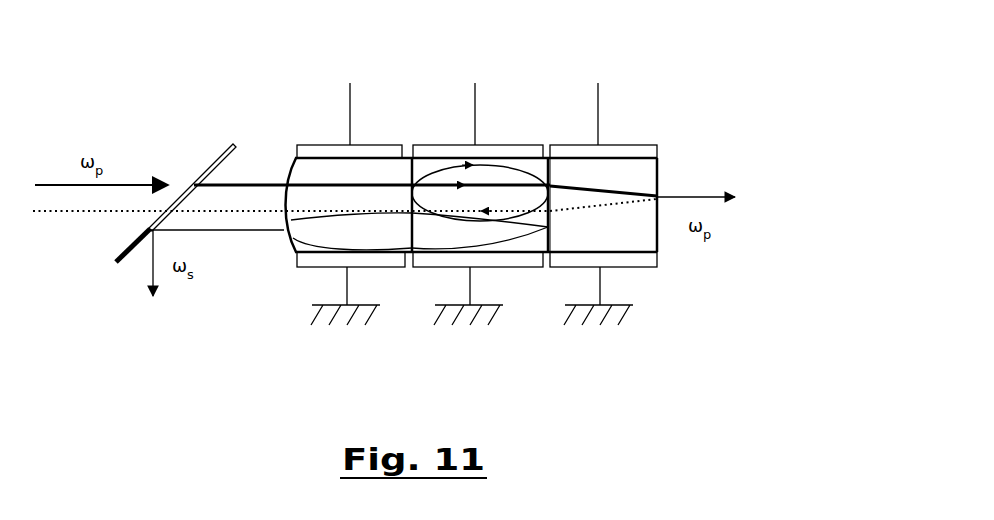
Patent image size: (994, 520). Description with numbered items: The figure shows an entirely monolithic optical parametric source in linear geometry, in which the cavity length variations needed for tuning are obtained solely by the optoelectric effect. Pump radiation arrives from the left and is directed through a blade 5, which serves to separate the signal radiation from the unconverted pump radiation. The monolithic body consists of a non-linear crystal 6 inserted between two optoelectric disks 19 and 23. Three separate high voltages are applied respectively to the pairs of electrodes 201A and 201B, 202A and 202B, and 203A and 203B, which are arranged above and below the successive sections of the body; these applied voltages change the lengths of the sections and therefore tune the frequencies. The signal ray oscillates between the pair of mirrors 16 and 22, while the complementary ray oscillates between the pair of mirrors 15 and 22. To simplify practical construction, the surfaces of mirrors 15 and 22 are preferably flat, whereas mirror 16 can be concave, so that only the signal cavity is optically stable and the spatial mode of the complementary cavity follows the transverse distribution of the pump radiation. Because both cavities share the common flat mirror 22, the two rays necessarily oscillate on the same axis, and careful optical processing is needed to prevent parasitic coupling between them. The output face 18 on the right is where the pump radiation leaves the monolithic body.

The blade 5 is at (217, 160).
The mirror 16 is at (290, 167).
The mirror 15 is at (411, 160).
The mirror 22 is at (548, 170).
The optoelectric disk 19 is at (627, 170).
The output face of nonlinear crystal 18 is at (658, 174).
The optoelectric disk 23 is at (293, 247).
The non-linear crystal 6 is at (493, 240).
The electrode 203A is at (325, 152).
The electrode 202A is at (443, 152).
The electrode 201A is at (613, 152).
The electrode 203B is at (308, 270).
The electrode 202B is at (507, 260).
The electrode 201B is at (633, 258).